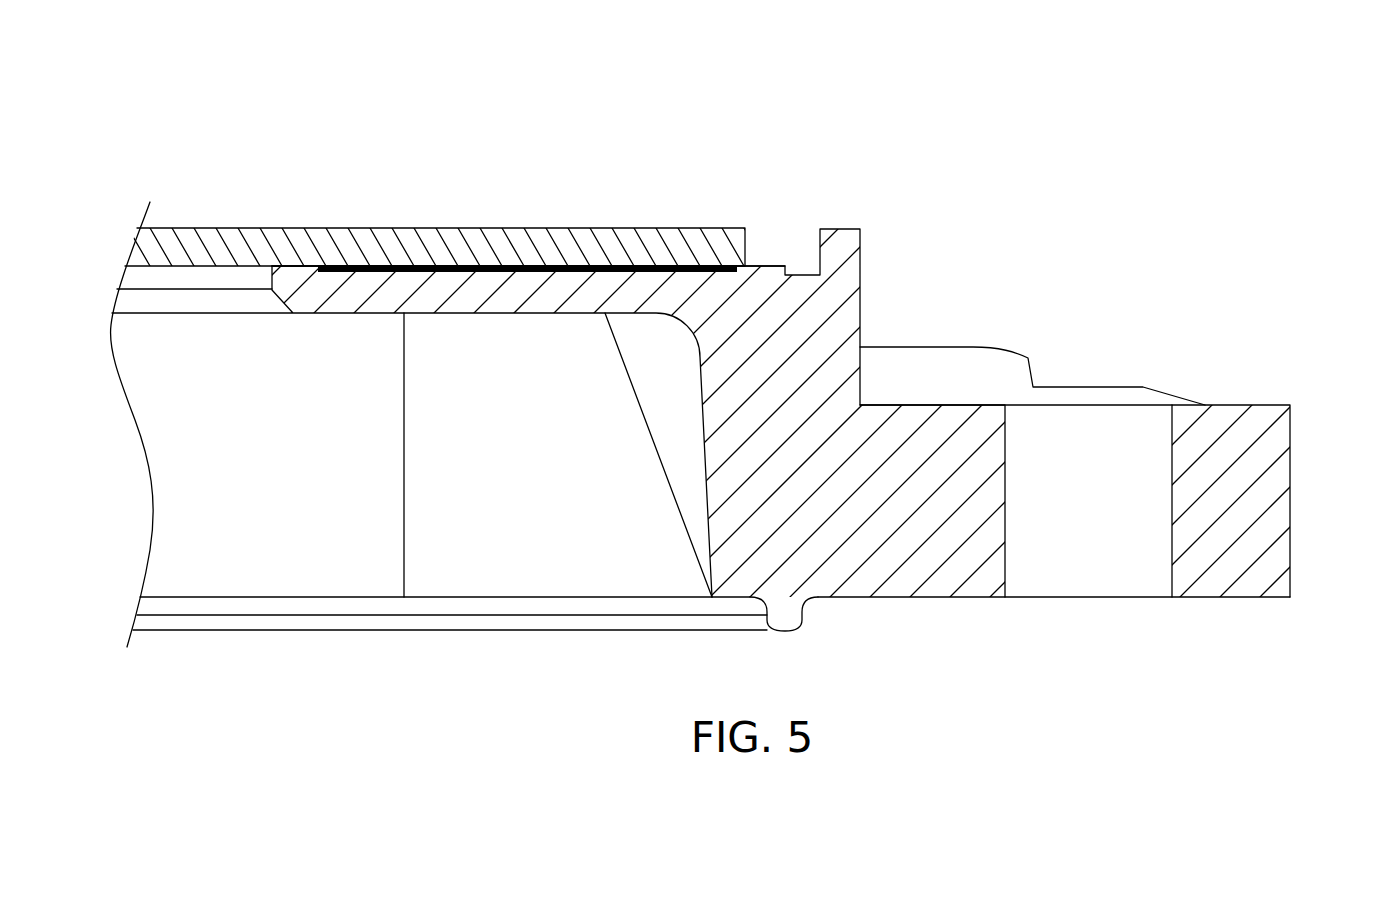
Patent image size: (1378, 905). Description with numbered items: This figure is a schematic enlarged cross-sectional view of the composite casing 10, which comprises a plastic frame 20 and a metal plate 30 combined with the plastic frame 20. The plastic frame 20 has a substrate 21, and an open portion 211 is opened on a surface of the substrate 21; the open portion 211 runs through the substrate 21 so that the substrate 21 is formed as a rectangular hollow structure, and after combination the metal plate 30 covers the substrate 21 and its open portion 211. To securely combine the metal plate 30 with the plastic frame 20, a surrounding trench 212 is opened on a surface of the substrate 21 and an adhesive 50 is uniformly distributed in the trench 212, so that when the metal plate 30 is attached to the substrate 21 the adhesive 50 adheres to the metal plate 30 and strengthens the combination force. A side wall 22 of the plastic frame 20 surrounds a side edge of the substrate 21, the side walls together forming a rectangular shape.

The composite casing 10 is at (128, 94).
The plastic frame 20 is at (1275, 403).
The substrate 21 is at (908, 415).
The open portion 211 is at (226, 283).
The trench 212 is at (540, 266).
The side wall 22 is at (1290, 482).
The metal plate 30 is at (706, 225).
The adhesive 50 is at (732, 264).